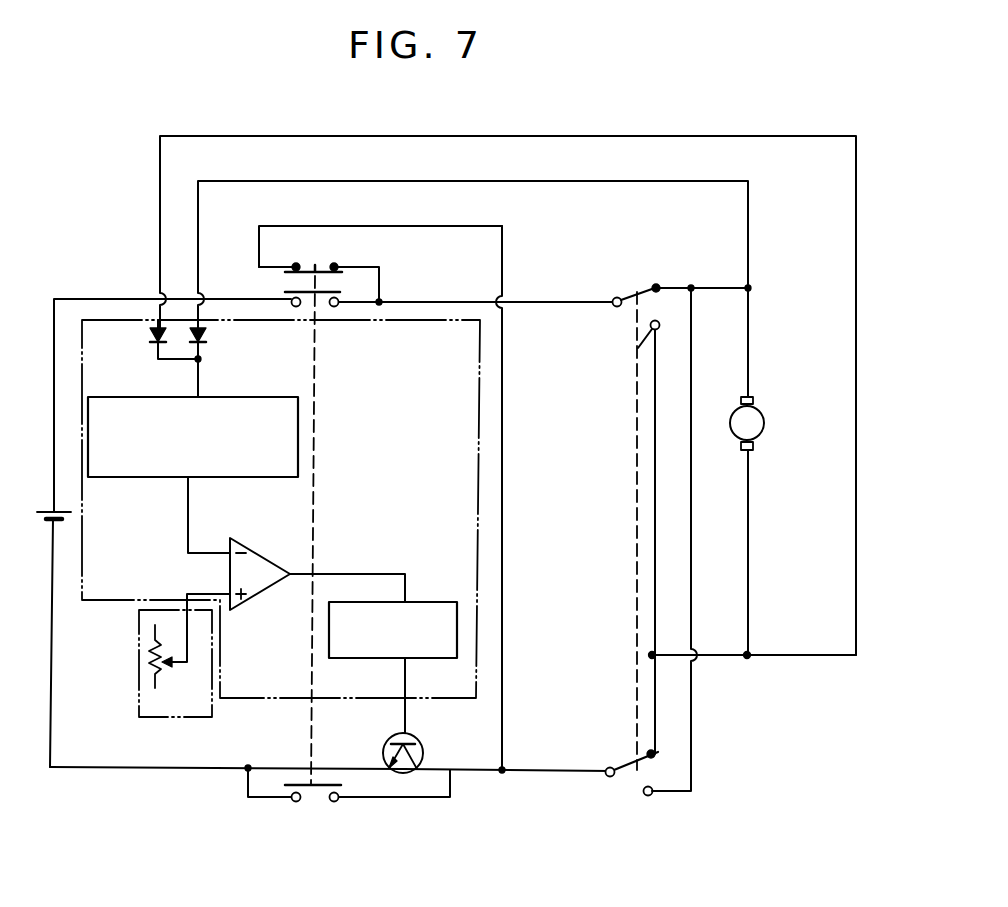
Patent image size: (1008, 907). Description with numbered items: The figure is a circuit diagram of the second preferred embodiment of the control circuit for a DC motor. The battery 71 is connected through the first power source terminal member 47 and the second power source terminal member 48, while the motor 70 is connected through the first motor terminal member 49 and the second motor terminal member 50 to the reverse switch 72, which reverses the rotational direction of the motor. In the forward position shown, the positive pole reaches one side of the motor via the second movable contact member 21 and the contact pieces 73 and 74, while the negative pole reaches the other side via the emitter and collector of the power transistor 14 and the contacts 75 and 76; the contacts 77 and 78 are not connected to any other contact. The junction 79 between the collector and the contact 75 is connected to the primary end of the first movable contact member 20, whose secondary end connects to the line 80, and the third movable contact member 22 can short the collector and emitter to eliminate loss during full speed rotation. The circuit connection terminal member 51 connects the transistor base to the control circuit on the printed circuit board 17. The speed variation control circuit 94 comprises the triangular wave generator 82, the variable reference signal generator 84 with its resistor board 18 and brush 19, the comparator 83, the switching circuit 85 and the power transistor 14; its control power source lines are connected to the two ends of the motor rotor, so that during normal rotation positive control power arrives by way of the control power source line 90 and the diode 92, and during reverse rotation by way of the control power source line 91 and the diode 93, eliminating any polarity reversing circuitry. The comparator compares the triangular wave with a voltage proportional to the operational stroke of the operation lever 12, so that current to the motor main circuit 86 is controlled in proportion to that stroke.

The operation lever 12 is at (313, 416).
The power transistor 14 is at (420, 749).
The printed circuit board 17 is at (97, 604).
The resistor board 18 is at (150, 672).
The brush 19 is at (178, 664).
The first movable contact member 20 is at (311, 265).
The second movable contact member 21 is at (286, 291).
The third movable contact member 22 is at (290, 782).
The first power source terminal member 47 is at (53, 410).
The second power source terminal member 48 is at (50, 668).
The first motor terminal member 49 is at (748, 357).
The second motor terminal member 50 is at (748, 530).
The circuit connection terminal member 51 is at (401, 714).
The motor 70 is at (765, 428).
The battery 71 is at (40, 512).
The reverse switch 72 is at (637, 511).
The contact piece 73 is at (617, 297).
The contact piece 74 is at (658, 284).
The contact 75 is at (609, 767).
The contact 76 is at (653, 752).
The contact 77 is at (640, 345).
The contact 78 is at (648, 797).
The junction 79 is at (503, 768).
The line 80 is at (415, 302).
The triangular wave generator 82 is at (258, 397).
The comparator 83 is at (262, 556).
The variable reference signal generator 84 is at (188, 718).
The switching circuit 85 is at (416, 602).
The motor main circuit 86 is at (140, 768).
The control power source line 90 is at (575, 181).
The control power source line 91 is at (628, 136).
The diode 92 is at (206, 330).
The diode 93 is at (150, 330).
The speed variation control circuit 94 is at (147, 679).